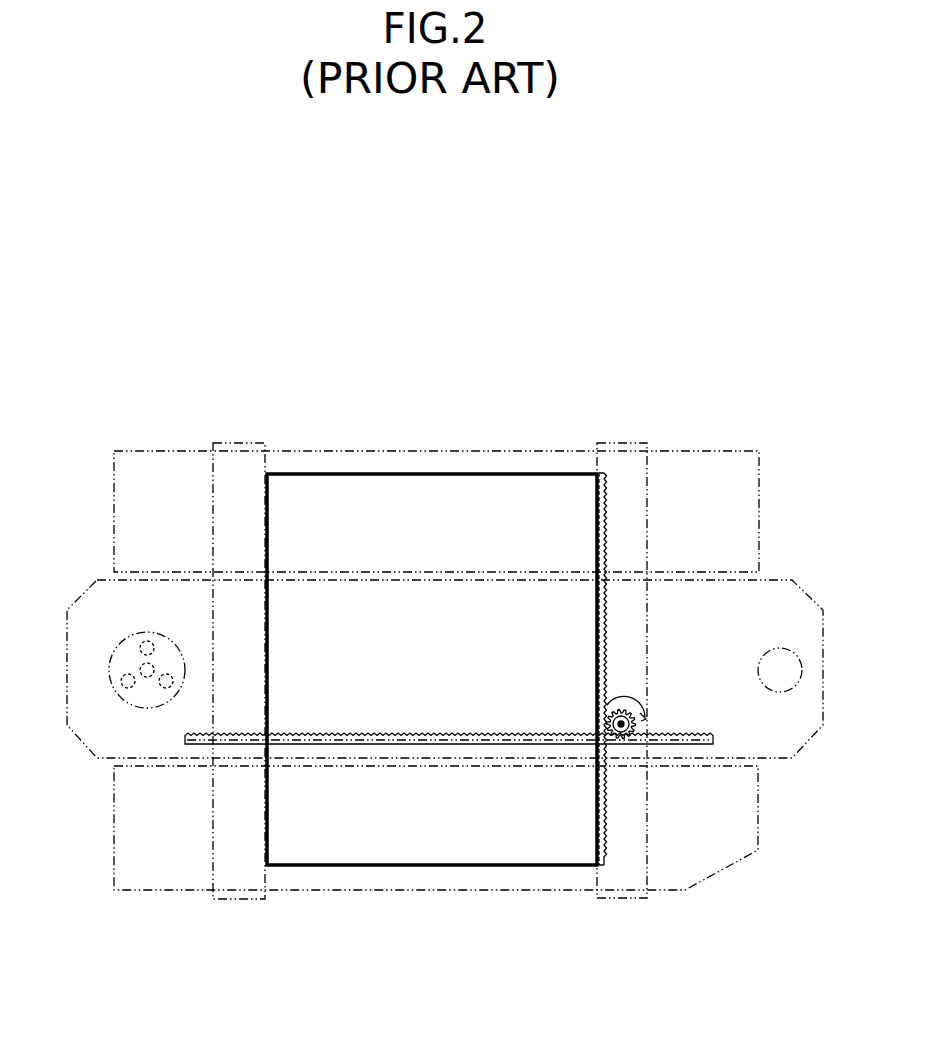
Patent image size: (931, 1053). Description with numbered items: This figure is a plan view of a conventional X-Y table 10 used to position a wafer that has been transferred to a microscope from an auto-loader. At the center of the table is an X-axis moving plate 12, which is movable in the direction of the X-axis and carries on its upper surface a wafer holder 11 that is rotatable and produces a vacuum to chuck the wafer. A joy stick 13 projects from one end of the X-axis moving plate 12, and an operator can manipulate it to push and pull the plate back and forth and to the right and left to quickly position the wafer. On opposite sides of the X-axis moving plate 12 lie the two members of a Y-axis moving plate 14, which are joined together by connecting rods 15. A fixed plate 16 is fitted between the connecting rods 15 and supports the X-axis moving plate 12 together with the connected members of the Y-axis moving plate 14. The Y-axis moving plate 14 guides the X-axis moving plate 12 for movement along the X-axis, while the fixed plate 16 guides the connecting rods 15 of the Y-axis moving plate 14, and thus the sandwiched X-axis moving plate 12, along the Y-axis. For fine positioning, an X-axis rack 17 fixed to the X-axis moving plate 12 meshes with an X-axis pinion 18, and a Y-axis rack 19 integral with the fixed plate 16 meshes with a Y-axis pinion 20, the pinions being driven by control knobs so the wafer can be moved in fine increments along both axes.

The X-Y table 10 is at (102, 430).
The wafer holder 11 is at (108, 665).
The X-axis moving plate 12 is at (777, 580).
The joy stick 13 is at (803, 660).
The Y-axis moving plate 14 is at (697, 450).
The connecting rods 15 is at (241, 441).
The fixed plate 16 is at (348, 474).
The X-axis rack 17 is at (515, 744).
The X-axis pinion 18 is at (630, 729).
The Y-axis rack 19 is at (605, 857).
The Y-axis pinion 20 is at (635, 718).